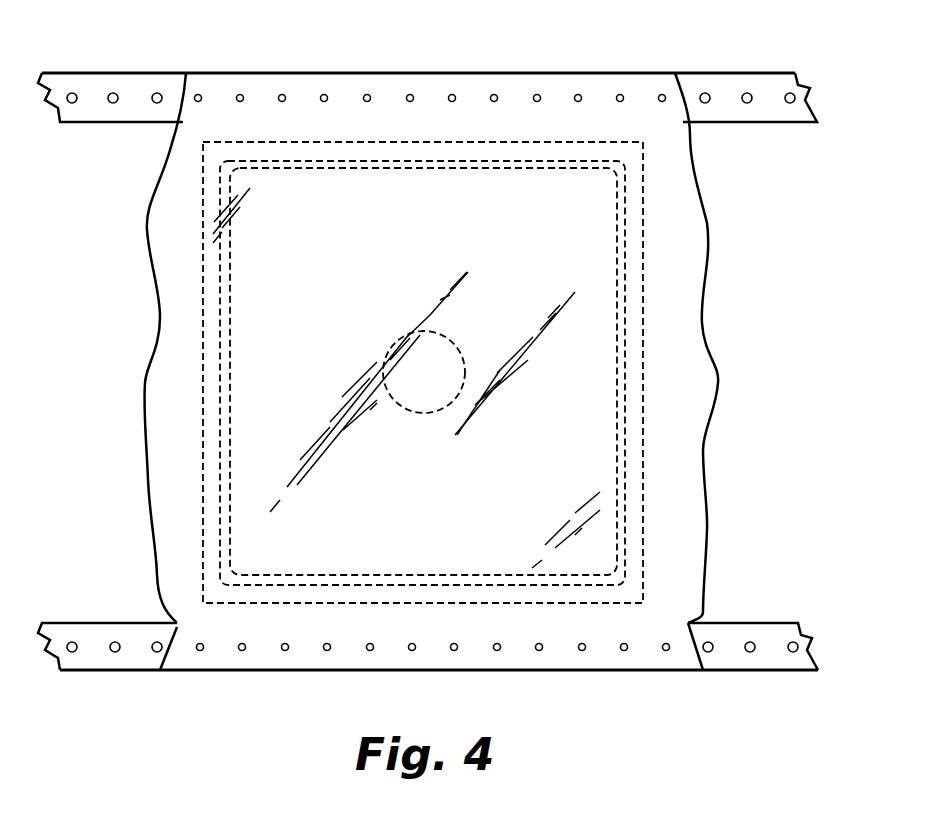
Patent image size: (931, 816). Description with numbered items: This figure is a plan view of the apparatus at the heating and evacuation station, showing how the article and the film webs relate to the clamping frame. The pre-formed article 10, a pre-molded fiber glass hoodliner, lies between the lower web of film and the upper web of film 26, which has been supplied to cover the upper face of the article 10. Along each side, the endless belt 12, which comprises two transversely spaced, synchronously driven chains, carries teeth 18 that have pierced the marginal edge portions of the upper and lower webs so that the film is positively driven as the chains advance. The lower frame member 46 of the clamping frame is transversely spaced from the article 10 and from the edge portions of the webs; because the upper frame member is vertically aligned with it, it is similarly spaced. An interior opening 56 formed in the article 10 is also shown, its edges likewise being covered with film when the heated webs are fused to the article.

The pre-formed article 10 is at (337, 157).
The endless belt 12 is at (98, 98).
The teeth 18 is at (747, 93).
The upper web of film 26 is at (178, 398).
The lower frame member 46 is at (537, 147).
The interior opening 56 is at (423, 417).